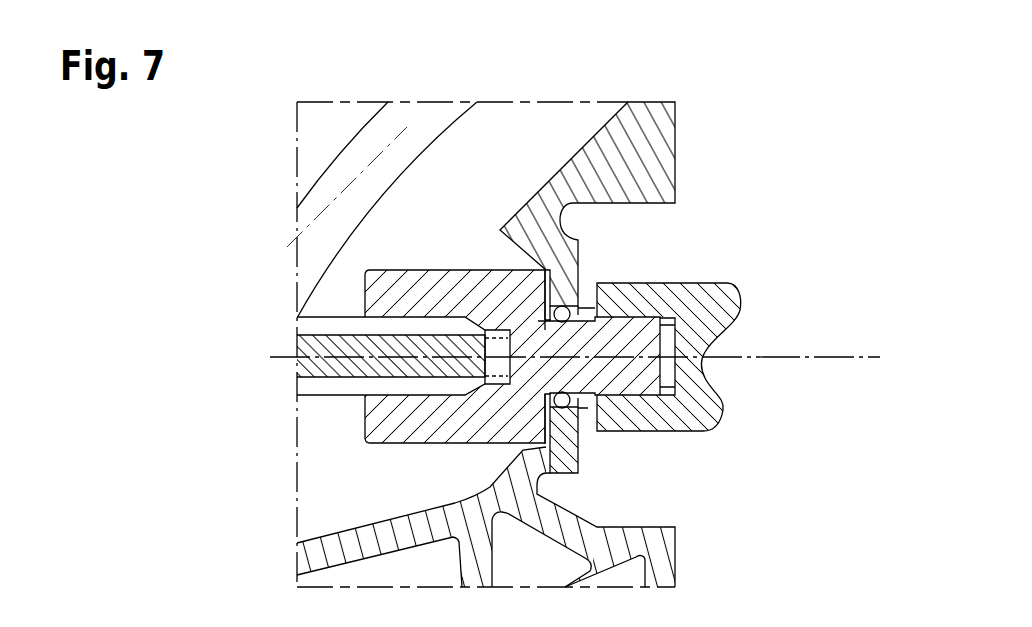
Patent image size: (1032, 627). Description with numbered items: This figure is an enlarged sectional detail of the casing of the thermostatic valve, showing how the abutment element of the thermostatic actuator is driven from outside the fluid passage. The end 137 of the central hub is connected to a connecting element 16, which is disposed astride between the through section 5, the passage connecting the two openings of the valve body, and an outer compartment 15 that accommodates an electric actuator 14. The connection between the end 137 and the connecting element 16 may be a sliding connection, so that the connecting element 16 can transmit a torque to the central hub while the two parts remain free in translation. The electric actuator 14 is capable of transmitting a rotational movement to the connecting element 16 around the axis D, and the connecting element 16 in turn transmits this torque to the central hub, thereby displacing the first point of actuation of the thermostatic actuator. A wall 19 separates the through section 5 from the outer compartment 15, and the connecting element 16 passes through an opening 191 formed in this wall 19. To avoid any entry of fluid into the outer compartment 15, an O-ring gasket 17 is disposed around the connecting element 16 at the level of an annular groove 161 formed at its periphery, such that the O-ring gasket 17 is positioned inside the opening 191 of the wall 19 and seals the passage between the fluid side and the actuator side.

The through section 5 is at (382, 284).
The axis D is at (273, 365).
The electric actuator 14 is at (703, 297).
The outer compartment 15 is at (820, 325).
The connecting element 16 is at (403, 270).
The O-ring gasket 17 is at (578, 430).
The wall 19 is at (649, 107).
The end of the central hub 137 is at (407, 398).
The annular groove 161 is at (531, 304).
The opening 191 is at (579, 289).